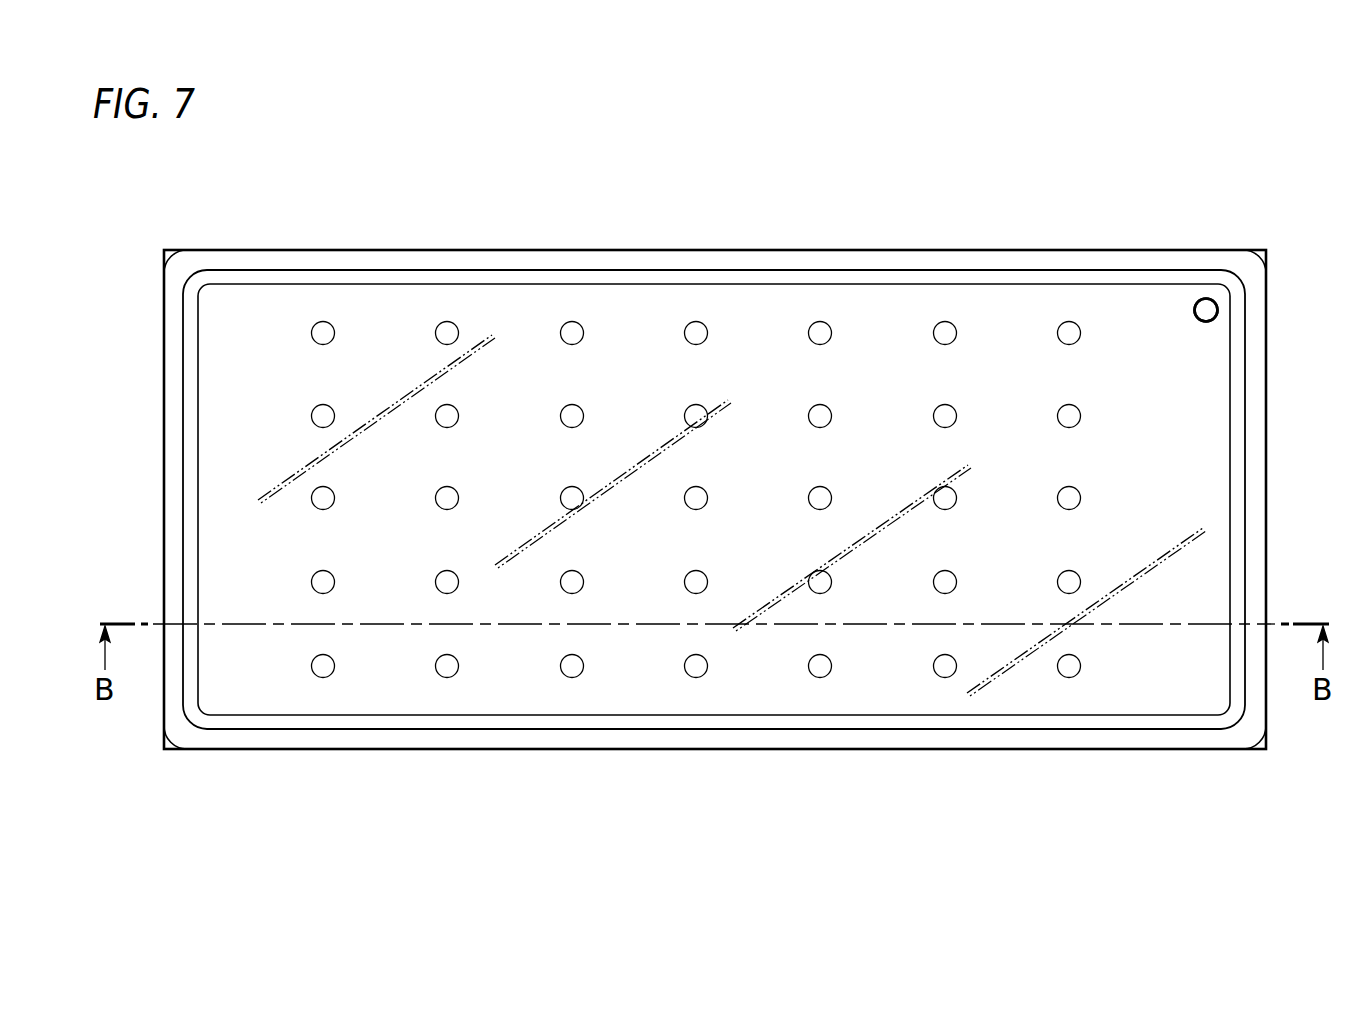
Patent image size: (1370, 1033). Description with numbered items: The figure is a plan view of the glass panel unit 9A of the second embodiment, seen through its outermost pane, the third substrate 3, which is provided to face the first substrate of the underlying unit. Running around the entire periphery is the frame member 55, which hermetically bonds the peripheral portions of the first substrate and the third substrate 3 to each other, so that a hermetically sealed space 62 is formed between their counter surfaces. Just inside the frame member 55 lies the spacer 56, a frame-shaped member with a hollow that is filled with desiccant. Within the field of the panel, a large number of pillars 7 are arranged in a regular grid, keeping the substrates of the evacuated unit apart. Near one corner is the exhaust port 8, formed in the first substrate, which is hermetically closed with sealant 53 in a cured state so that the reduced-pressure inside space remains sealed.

The third substrate 3 is at (890, 320).
The pillar 7 is at (940, 580).
The exhaust port 8 is at (1193, 308).
The glass panel unit 9A is at (1270, 333).
The sealant 53 is at (1204, 320).
The frame member 55 is at (533, 262).
The spacer 56 is at (644, 281).
The space 62 is at (770, 688).